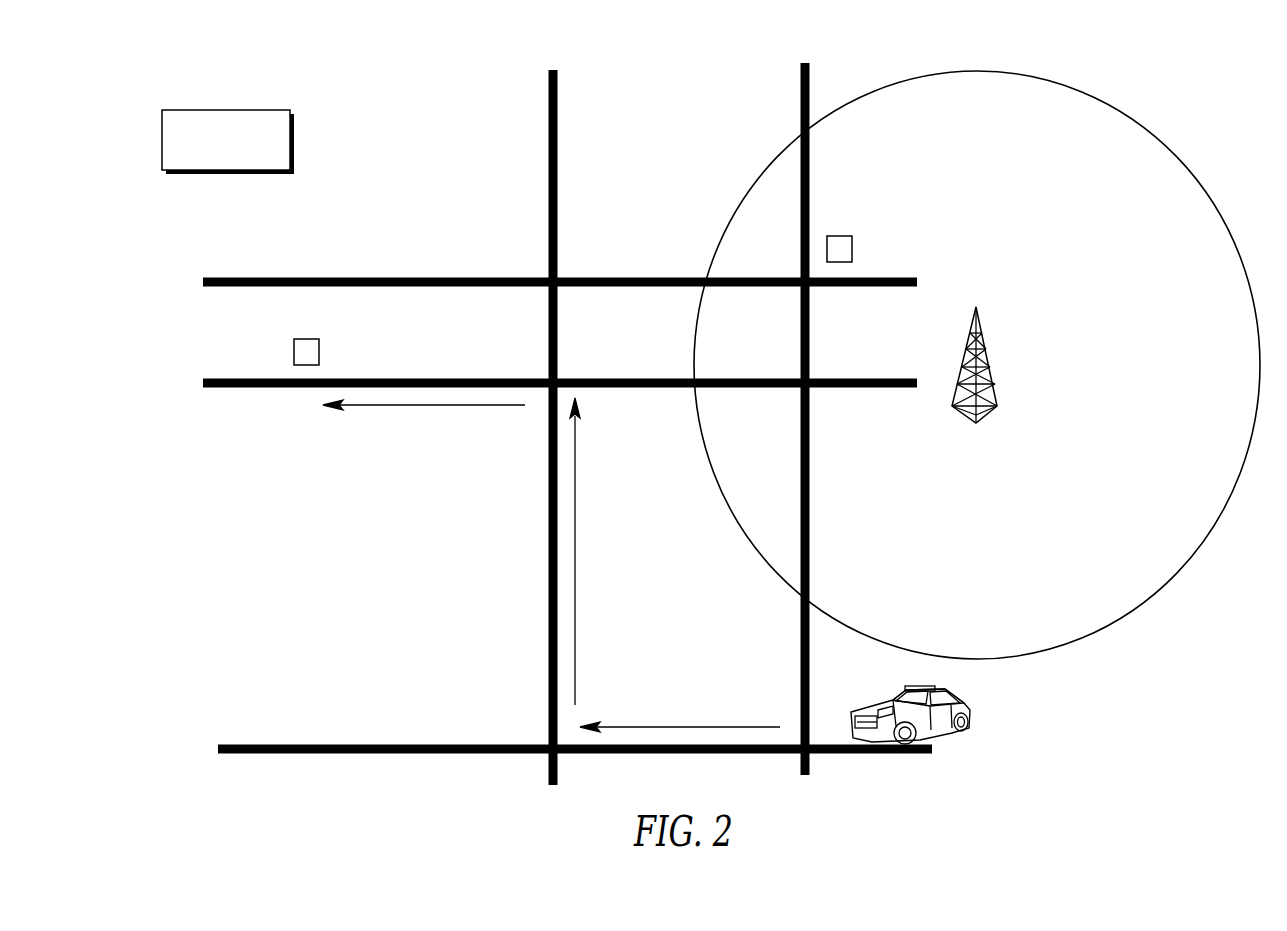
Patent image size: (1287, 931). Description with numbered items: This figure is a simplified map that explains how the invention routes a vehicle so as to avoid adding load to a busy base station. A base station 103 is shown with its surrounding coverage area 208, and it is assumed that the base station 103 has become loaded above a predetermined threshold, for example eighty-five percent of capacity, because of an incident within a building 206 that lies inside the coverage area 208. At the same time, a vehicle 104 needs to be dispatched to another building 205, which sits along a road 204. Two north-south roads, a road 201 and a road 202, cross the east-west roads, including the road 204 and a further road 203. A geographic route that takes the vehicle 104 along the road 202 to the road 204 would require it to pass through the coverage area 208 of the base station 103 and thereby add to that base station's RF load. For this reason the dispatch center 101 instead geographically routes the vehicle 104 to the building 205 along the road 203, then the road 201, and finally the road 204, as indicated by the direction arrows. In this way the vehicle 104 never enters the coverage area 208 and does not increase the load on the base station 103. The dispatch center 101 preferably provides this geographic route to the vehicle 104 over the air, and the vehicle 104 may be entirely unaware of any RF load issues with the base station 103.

The dispatch center 101 is at (228, 110).
The base station 103 is at (982, 326).
The vehicle 104 is at (968, 708).
The road 201 is at (553, 70).
The road 202 is at (809, 190).
The road 203 is at (241, 745).
The road 204 is at (227, 379).
The building 205 is at (306, 339).
The building 206 is at (839, 236).
The coverage area 208 is at (975, 71).